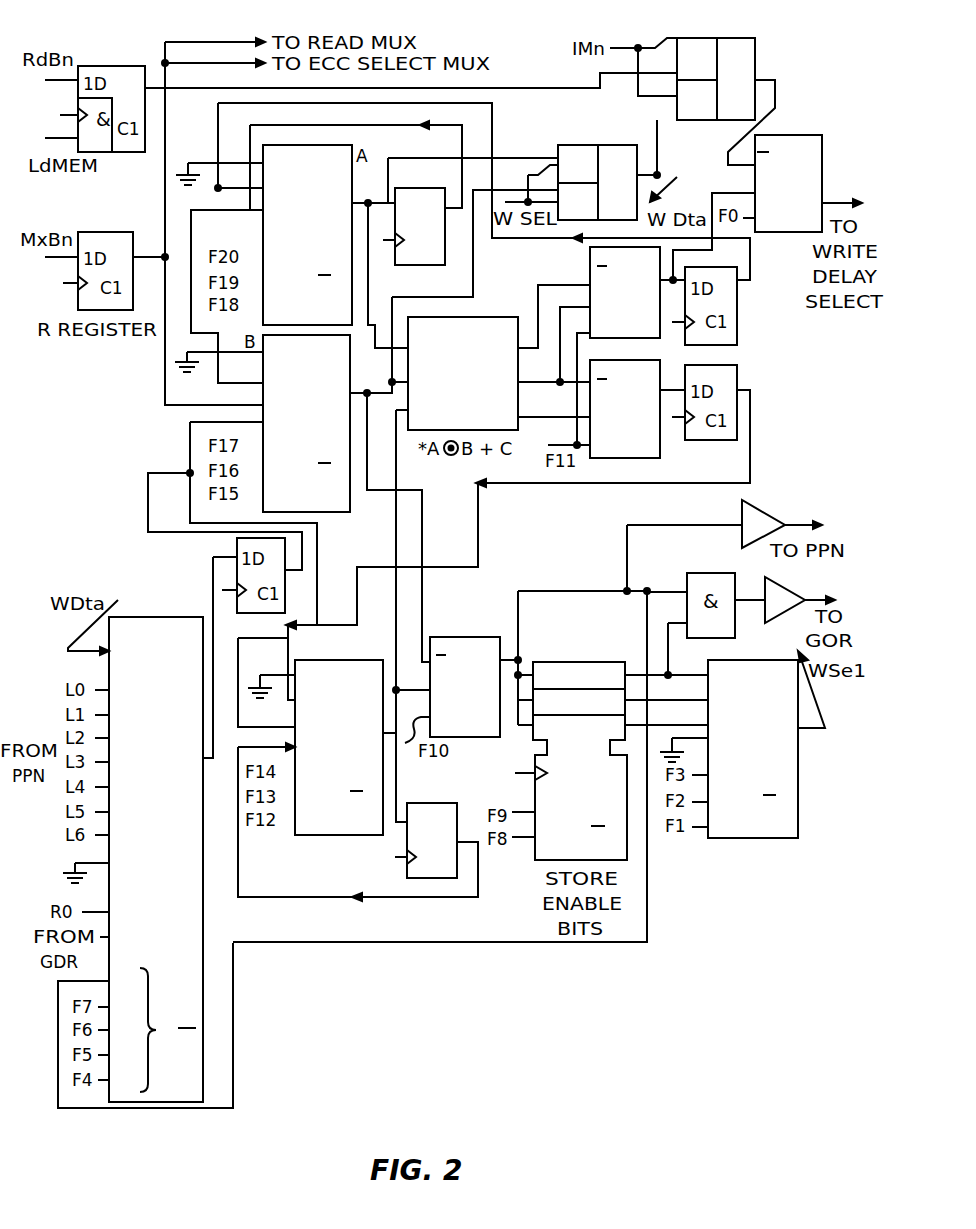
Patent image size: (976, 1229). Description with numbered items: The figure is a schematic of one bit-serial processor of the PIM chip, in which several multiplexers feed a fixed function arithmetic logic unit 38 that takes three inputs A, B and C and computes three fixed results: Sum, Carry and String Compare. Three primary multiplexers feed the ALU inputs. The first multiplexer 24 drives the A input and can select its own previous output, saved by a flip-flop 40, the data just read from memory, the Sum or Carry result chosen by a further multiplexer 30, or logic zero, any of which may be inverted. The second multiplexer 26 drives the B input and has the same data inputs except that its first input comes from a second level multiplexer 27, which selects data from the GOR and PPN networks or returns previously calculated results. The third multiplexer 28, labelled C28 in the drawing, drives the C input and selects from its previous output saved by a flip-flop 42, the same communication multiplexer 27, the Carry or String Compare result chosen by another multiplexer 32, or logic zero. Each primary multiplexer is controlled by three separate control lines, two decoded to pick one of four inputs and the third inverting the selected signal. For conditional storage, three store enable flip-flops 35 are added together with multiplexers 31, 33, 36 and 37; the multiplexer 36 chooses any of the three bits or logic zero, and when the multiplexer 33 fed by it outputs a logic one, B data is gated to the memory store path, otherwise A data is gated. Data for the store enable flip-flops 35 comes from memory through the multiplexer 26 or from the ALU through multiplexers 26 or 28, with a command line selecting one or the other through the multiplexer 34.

The first multiplexer 24 is at (353, 148).
The second multiplexer 26 is at (352, 345).
The second level multiplexer 27 is at (134, 618).
The third multiplexer 28 is at (339, 733).
The third multiplexer C28 is at (322, 660).
The multiplexer 30 is at (590, 262).
The multiplexer 31 is at (759, 37).
The multiplexer 32 is at (645, 459).
The multiplexer 33 is at (577, 145).
The multiplexer 34 is at (452, 637).
The store enable flip-flops 35 is at (582, 662).
The multiplexer 36 is at (742, 660).
The multiplexer 37 is at (788, 135).
The arithmetic logic unit 38 is at (487, 317).
The flip-flop 40 is at (409, 188).
The flip-flop 42 is at (414, 803).